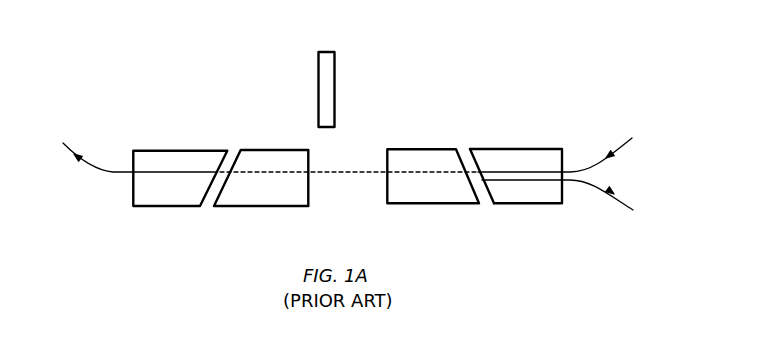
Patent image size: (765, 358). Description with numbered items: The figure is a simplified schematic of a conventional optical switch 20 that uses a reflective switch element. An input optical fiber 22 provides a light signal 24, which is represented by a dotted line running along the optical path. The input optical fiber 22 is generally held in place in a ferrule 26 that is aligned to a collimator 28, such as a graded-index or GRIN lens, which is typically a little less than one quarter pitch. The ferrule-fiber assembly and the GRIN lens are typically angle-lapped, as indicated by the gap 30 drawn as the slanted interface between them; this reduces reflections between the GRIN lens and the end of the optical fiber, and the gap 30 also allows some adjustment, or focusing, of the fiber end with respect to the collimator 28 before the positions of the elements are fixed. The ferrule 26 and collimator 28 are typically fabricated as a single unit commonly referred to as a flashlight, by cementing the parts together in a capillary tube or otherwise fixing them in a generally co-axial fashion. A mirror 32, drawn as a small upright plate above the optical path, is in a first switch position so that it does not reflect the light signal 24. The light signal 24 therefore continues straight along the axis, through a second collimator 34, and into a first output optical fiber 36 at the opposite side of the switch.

The optical switch 20 is at (526, 69).
The input optical fiber 22 is at (590, 167).
The light signal 24 is at (352, 170).
The ferrule 26 is at (518, 148).
The collimator 28 is at (420, 149).
The gap 30 is at (487, 200).
The mirror 32 is at (328, 52).
The second collimator 34 is at (273, 150).
The first output optical fiber 36 is at (107, 170).